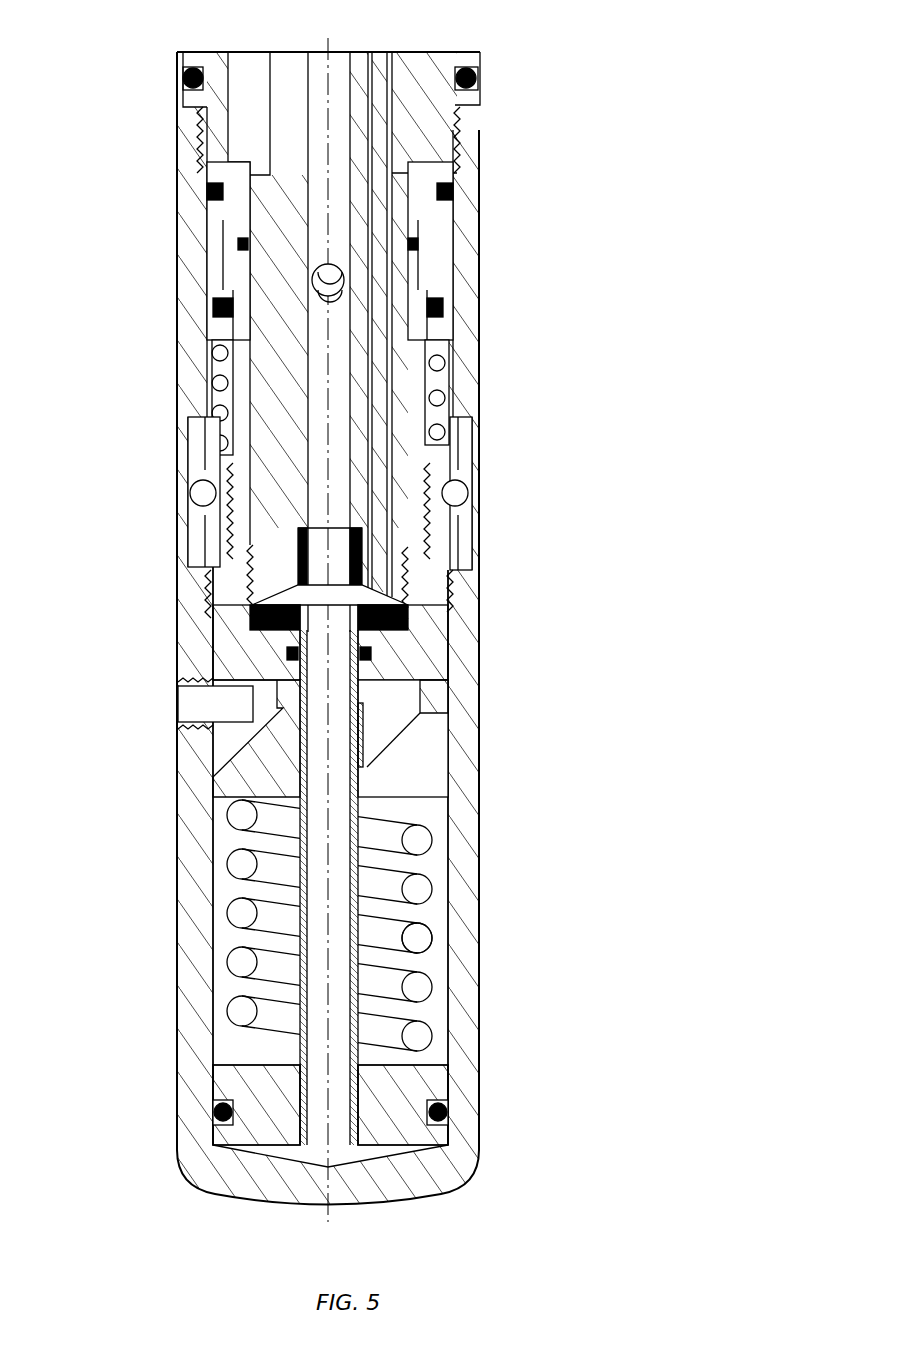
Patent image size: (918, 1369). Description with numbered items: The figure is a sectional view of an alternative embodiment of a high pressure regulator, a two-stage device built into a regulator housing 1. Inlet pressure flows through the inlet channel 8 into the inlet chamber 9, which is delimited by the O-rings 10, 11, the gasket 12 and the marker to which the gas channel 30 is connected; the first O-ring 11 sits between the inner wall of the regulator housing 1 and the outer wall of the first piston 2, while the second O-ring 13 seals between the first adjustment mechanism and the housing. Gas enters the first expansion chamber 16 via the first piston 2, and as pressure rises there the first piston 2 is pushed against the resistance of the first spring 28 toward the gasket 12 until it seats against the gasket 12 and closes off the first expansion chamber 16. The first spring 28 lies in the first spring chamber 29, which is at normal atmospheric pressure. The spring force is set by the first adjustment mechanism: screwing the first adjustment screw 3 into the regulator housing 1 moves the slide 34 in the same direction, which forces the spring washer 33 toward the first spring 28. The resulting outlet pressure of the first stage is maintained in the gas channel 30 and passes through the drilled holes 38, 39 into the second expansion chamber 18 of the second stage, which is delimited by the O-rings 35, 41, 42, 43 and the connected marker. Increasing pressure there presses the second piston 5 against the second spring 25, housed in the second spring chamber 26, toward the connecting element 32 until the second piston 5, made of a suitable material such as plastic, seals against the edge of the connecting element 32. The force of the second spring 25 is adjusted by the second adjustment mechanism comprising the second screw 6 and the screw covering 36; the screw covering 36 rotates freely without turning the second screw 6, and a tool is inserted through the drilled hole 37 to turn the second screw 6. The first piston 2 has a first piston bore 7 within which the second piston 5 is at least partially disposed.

The regulator housing 1 is at (467, 1065).
The first piston 2 is at (430, 1053).
The first adjustment screw 3 is at (200, 705).
The second piston 5 is at (440, 267).
The second screw 6 is at (220, 470).
The first piston bore 7 is at (318, 845).
The inlet channel 8 is at (380, 175).
The inlet chamber 9 is at (220, 600).
The O-ring 10 is at (290, 653).
The first O-ring 11 is at (410, 625).
The gasket 12 is at (410, 575).
The second O-ring 13 is at (220, 1110).
The first expansion chamber 16 is at (340, 1153).
The second expansion chamber 18 is at (250, 115).
The second spring 25 is at (440, 432).
The second spring chamber 26 is at (447, 383).
The first spring 28 is at (417, 922).
The first spring chamber 29 is at (432, 857).
The gas channel 30 is at (317, 402).
The connecting element 32 is at (225, 583).
The spring washer 33 is at (427, 770).
The slide 34 is at (235, 730).
The O-ring 35 is at (482, 80).
The screw covering 36 is at (472, 510).
The drilled hole 37 is at (460, 492).
The drilled hole 38 is at (340, 290).
The drilled hole 39 is at (312, 276).
The O-ring 41 is at (208, 190).
The O-ring 42 is at (243, 242).
The O-ring 43 is at (220, 308).